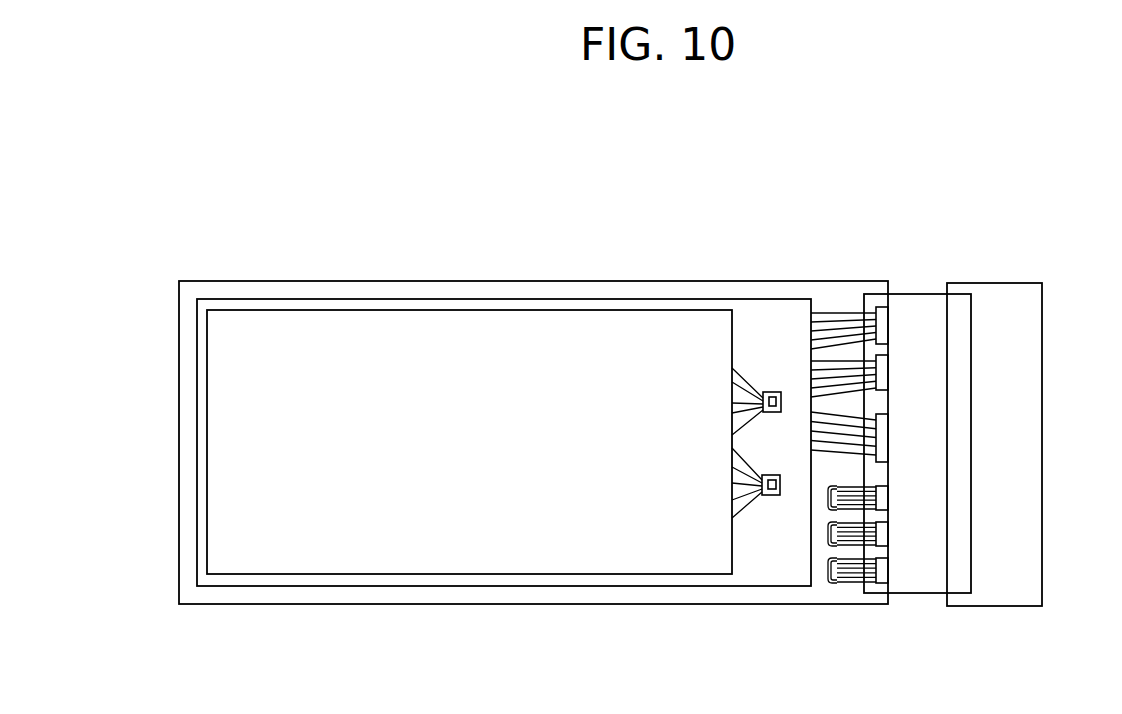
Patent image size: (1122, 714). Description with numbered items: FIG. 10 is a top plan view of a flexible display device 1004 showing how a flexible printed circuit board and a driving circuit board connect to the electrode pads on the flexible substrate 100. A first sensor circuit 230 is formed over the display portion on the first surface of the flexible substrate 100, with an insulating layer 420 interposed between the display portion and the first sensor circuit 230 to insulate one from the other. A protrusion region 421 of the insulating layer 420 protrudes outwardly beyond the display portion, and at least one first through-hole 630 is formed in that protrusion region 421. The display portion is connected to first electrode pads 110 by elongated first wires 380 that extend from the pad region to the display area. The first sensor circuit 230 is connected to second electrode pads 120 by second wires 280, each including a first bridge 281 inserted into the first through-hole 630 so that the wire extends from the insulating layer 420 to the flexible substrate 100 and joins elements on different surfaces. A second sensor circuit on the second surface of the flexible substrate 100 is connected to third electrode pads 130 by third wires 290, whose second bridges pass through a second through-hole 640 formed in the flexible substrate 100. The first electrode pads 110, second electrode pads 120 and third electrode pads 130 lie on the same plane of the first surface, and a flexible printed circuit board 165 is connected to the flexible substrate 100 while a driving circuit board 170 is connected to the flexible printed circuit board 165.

The flexible display device 1004 is at (604, 212).
The flexible substrate 100 is at (533, 288).
The first sensor circuit 230 is at (418, 345).
The insulating layer 420 is at (652, 308).
The protrusion region 421 is at (752, 315).
The first bridge 281 is at (772, 392).
The first wires 380 is at (835, 312).
The second wires 280 is at (843, 414).
The first electrode pads 110 is at (883, 313).
The second electrode pads 120 is at (882, 437).
The third electrode pads 130 is at (881, 575).
The flexible printed circuit board 165 is at (920, 310).
The driving circuit board 170 is at (1003, 312).
The first through-hole 630 is at (772, 497).
The second through-hole 640 is at (823, 532).
The third wires 290 is at (830, 578).